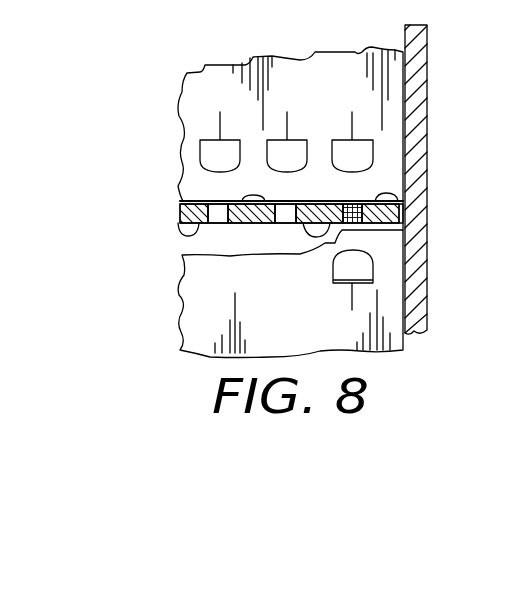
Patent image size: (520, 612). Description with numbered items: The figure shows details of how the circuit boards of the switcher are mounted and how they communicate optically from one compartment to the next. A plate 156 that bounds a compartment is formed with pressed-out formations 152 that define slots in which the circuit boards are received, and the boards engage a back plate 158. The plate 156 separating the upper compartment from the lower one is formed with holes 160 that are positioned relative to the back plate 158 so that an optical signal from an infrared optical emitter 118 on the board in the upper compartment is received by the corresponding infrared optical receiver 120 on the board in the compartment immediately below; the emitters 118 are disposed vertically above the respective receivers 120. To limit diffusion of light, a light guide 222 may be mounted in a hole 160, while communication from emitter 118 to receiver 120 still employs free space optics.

The infrared optical emitter 118 is at (333, 140).
The infrared optical receiver 120 is at (332, 265).
The pressed-out formation 152 is at (252, 198).
The bottom plate 156 is at (185, 216).
The back plate 158 is at (428, 240).
The hole 160 is at (285, 226).
The light guide 222 is at (388, 214).